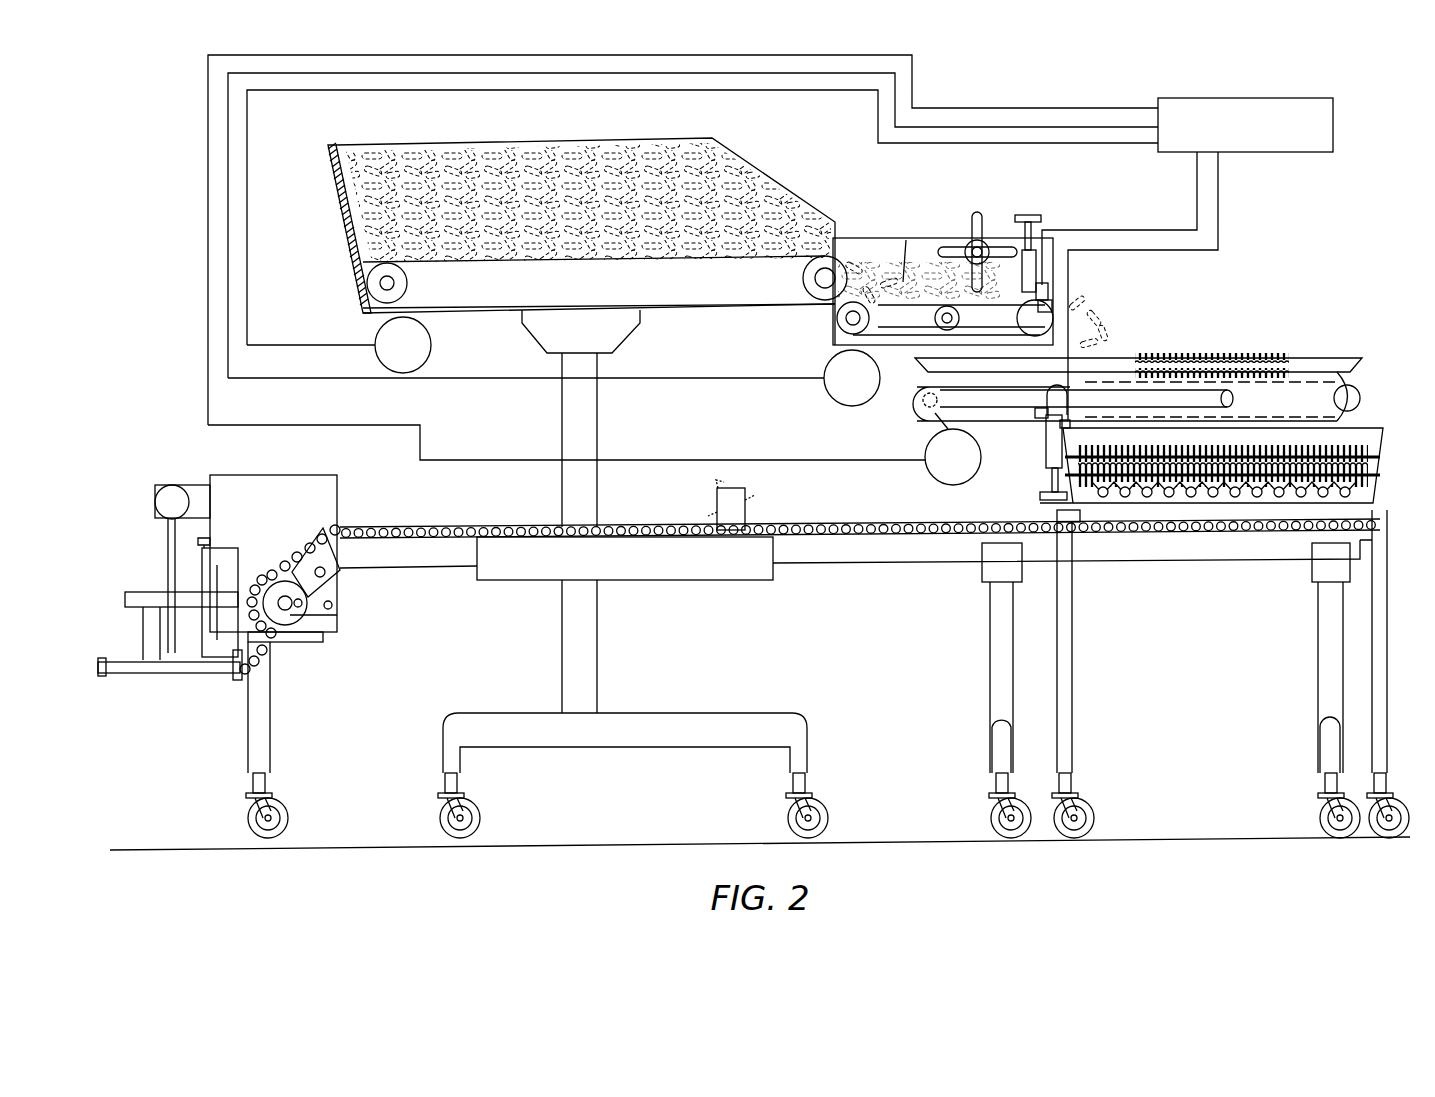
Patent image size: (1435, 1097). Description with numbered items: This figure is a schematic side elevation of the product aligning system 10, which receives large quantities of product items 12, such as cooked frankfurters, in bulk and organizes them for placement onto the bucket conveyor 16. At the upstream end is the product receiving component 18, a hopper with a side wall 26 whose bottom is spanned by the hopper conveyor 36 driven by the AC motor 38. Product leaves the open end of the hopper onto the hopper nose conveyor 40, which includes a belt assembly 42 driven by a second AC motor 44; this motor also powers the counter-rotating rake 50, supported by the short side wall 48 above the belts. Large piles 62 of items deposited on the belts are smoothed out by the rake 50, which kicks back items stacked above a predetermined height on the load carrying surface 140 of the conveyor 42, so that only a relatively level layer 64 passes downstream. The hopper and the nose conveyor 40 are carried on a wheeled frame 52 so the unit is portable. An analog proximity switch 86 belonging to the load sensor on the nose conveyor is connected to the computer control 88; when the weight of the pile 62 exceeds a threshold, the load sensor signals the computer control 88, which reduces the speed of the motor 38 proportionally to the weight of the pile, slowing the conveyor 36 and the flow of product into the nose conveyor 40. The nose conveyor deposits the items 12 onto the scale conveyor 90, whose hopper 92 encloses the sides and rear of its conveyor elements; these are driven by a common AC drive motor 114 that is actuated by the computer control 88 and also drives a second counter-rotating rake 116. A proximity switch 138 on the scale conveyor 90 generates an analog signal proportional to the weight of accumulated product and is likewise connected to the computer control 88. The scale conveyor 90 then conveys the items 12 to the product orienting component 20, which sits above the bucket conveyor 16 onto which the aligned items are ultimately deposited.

The product aligning system 10 is at (1168, 301).
The product items 12 is at (1105, 312).
The bucket conveyor 16 is at (828, 552).
The product receiving component 18 is at (325, 150).
The product orienting component 20 is at (1080, 494).
The side wall 26 is at (352, 150).
The hopper conveyor 36 is at (660, 290).
The AC motor 38 is at (376, 338).
The hopper nose conveyor 40 is at (992, 235).
The belt assembly 42 is at (900, 340).
The AC motor 44 is at (826, 385).
The short side wall 48 is at (925, 250).
The counter-rotating rake 50 is at (985, 232).
The wheeled frame 52 is at (583, 642).
The pile 62 is at (867, 270).
The level layer 64 is at (1030, 280).
The analog proximity switch 86 is at (1053, 303).
The computer control 88 is at (1235, 98).
The scale conveyor 90 is at (1300, 356).
The hopper 92 is at (1322, 392).
The AC drive motor 114 is at (932, 465).
The counter-rotating rake 116 is at (1185, 357).
The proximity switch 138 is at (1048, 432).
The load carrying surface 140 is at (905, 240).